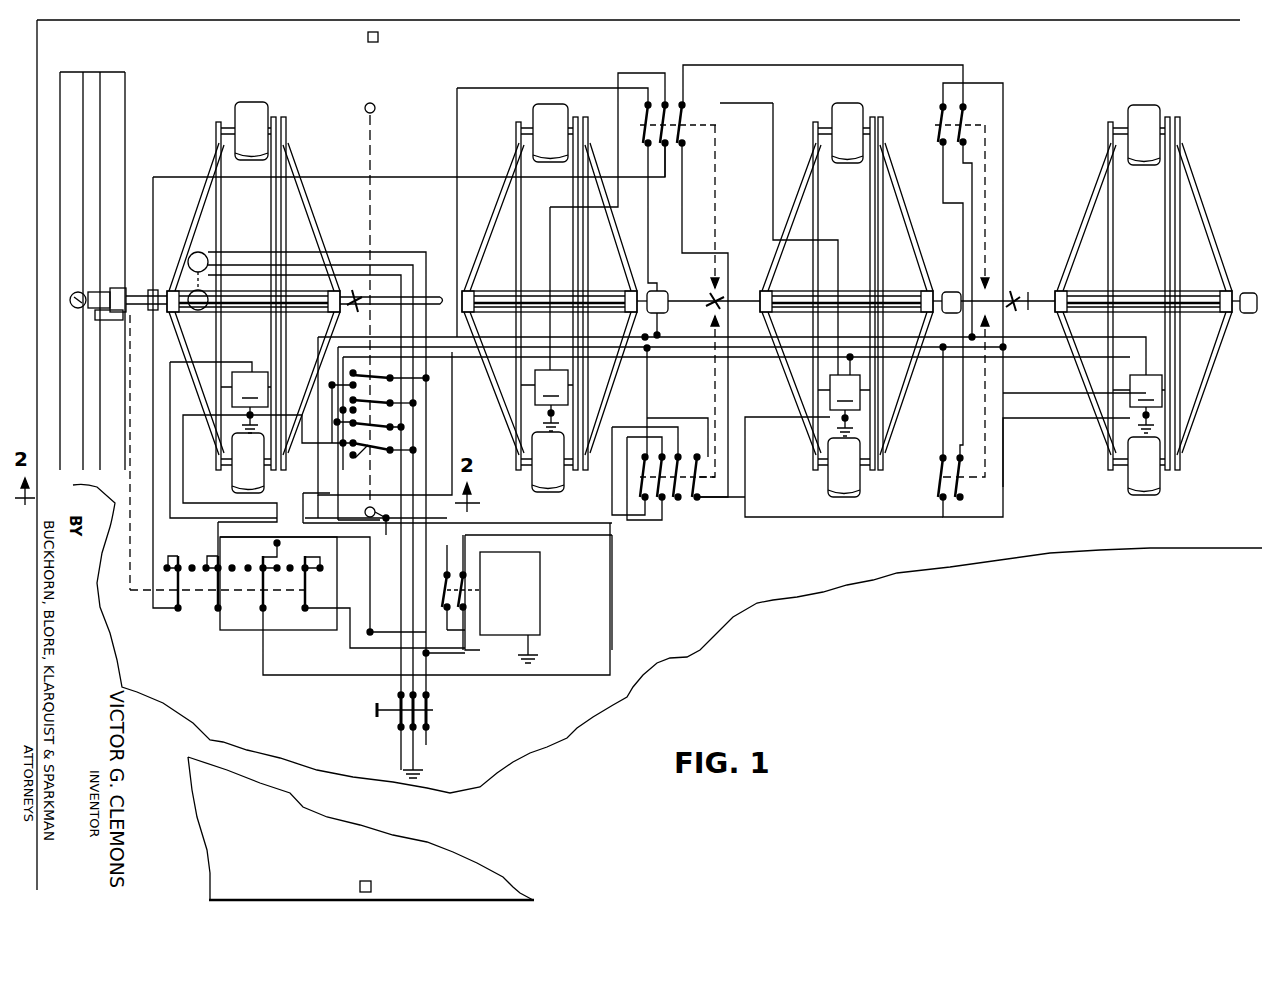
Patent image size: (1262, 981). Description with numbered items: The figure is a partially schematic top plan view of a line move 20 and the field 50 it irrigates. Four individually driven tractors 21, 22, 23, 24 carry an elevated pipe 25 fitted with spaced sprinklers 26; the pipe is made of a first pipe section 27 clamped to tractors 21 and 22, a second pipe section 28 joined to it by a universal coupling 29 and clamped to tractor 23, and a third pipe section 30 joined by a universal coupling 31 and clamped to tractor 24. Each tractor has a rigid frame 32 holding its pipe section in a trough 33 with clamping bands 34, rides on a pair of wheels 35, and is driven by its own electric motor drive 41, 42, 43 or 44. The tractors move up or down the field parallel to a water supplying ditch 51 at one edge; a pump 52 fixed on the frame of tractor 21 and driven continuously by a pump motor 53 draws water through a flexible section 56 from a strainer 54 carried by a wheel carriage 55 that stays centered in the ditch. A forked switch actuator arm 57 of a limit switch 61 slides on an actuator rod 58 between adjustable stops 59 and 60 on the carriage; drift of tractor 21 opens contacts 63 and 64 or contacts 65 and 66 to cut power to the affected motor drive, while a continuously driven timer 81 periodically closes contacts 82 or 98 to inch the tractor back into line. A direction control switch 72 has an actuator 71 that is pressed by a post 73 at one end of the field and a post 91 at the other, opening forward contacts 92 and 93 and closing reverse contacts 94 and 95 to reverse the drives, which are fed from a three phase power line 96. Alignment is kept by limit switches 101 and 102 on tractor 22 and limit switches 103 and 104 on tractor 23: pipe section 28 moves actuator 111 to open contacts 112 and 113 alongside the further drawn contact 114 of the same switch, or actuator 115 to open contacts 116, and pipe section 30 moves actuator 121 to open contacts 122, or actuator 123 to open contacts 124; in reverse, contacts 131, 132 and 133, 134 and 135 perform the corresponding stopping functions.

The line move 20 is at (208, 112).
The tractor 21 is at (300, 115).
The tractor 22 is at (548, 88).
The tractor 23 is at (890, 118).
The tractor 24 is at (1185, 118).
The pipe 25 is at (1008, 296).
The sprinklers 26 is at (347, 312).
The first pipe section 27 is at (440, 296).
The second pipe section 28 is at (725, 306).
The universal coupling 29 is at (658, 291).
The third pipe section 30 is at (1032, 291).
The universal coupling 31 is at (948, 291).
The frame 32 is at (1090, 185).
The trough 33 is at (1130, 291).
The clamping band 34 is at (1228, 291).
The wheels 35 is at (1128, 487).
The electric motor drive 41 is at (246, 402).
The electric motor drive 42 is at (575, 392).
The electric motor drive 43 is at (844, 405).
The electric motor drive 44 is at (1139, 404).
The field 50 is at (1085, 538).
The water supplying ditch 51 is at (105, 120).
The pump 52 is at (196, 312).
The pump motor 53 is at (190, 258).
The strainer 54 is at (96, 290).
The wheel carriage 55 is at (72, 292).
The flexible section 56 is at (160, 310).
The forked switch actuator arm 57 is at (103, 320).
The actuator rod 58 is at (140, 312).
The stop 59 is at (76, 312).
The stop 60 is at (115, 322).
The limit switch 61 is at (381, 598).
The contacts 63 is at (172, 578).
The contacts 64 is at (210, 578).
The contacts 65 is at (258, 598).
The contacts 66 is at (300, 598).
The actuator 71 is at (382, 515).
The direction control switch 72 is at (351, 463).
The post 73 is at (371, 885).
The timer 81 is at (540, 590).
The contacts 82 is at (462, 590).
The post 91 is at (378, 37).
The forward contacts 92 is at (369, 415).
The forward contacts 93 is at (372, 455).
The reverse contacts 94 is at (383, 392).
The reverse contacts 95 is at (379, 399).
The three phase power line 96 is at (428, 767).
The contacts 98 is at (462, 620).
The limit switch 101 is at (777, 533).
The limit switch 102 is at (665, 98).
The limit switch 103 is at (943, 503).
The limit switch 104 is at (935, 135).
The switch actuator 111 is at (718, 398).
The contacts 112 is at (675, 502).
The contacts 113 is at (658, 500).
The relay contact 114 is at (638, 505).
The actuator 115 is at (718, 225).
The contacts 116 is at (682, 100).
The actuator 121 is at (988, 403).
The contacts 122 is at (938, 478).
The actuator 123 is at (1000, 205).
The contacts 124 is at (940, 108).
The contacts 131 is at (698, 502).
The contacts 132 is at (645, 118).
The contacts 133 is at (672, 145).
The contacts 134 is at (962, 478).
The contacts 135 is at (963, 118).